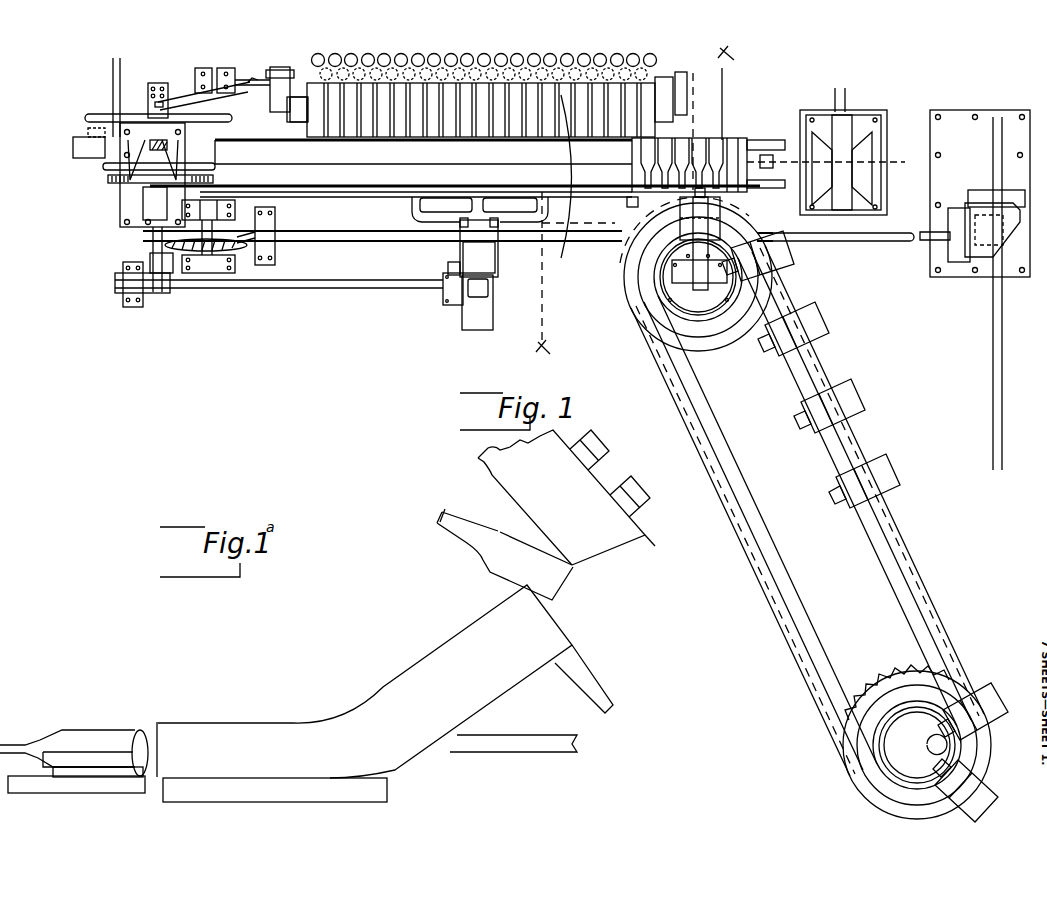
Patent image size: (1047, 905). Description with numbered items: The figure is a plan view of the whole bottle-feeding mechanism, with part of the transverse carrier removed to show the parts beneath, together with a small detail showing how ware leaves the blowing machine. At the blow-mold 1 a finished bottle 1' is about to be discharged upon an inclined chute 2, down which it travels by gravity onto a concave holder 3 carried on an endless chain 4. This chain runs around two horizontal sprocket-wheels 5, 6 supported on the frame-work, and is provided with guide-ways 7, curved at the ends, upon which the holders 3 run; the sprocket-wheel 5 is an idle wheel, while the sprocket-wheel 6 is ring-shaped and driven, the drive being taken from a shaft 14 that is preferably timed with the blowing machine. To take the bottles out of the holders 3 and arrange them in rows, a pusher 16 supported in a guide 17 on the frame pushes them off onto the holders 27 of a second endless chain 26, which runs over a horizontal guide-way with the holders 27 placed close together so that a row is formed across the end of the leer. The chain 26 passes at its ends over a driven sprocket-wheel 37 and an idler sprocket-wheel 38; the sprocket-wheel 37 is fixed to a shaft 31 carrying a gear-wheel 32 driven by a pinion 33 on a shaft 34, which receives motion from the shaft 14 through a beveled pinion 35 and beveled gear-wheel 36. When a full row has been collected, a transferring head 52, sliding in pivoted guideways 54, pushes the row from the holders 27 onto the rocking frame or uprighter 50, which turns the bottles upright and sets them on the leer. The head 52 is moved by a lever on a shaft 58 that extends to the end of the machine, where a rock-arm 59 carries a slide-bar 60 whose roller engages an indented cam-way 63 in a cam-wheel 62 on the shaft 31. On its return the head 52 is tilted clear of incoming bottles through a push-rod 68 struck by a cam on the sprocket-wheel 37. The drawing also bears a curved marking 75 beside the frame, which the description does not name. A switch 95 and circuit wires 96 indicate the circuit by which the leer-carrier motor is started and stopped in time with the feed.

In FIG. 1, the blow-mold 1 is at (566, 497).
In FIG. 1, the bottle 1' is at (505, 554).
In FIG. 1A, the bottle 1' is at (74, 731).
In FIG. 1, the inclined chute 2 is at (283, 727).
In FIG. 1, the concave holder 3 is at (972, 806).
In FIG. 1A, the concave holder 3 is at (95, 757).
In FIG. 1, the endless chain 4 is at (832, 713).
In FIG. 1, the idle sprocket-wheel 5 is at (861, 706).
In FIG. 1, the driven sprocket-wheel 6 is at (643, 303).
In FIG. 1, the guide-ways 7 is at (942, 608).
In FIG. 1, the shaft 14 is at (350, 242).
In FIG. 1, the pusher 16 is at (730, 193).
In FIG. 1, the guide 17 is at (692, 292).
In FIG. 1, the endless chain 26 is at (770, 157).
In FIG. 1, the holders 27 is at (733, 138).
In FIG. 1, the shaft 31 is at (160, 138).
In FIG. 1, the gear-wheel 32 is at (110, 184).
In FIG. 1, the pinion 33 is at (216, 181).
In FIG. 1, the shaft 34 is at (208, 240).
In FIG. 1, the beveled pinion 35 is at (276, 232).
In FIG. 1, the beveled gear-wheel 36 is at (238, 253).
In FIG. 1, the driven sprocket-wheel 37 is at (191, 162).
In FIG. 1, the idler sprocket-wheel 38 is at (889, 160).
In FIG. 1, the rocking frame 50 is at (632, 93).
In FIG. 1, the head 52 is at (623, 209).
In FIG. 1, the guideways 54 is at (498, 259).
In FIG. 1, the shaft 58 is at (372, 289).
In FIG. 1, the rock-arm 59 is at (153, 294).
In FIG. 1, the slide-bar 60 is at (152, 244).
In FIG. 1, the cam-wheel 62 is at (133, 108).
In FIG. 1, the cam-way 63 is at (205, 117).
In FIG. 1, the push-rod 68 is at (288, 199).
In FIG. 1, the pipe 75 is at (563, 246).
In FIG. 1, the switch 95 is at (74, 159).
In FIG. 1, the circuit wires 96 is at (122, 78).